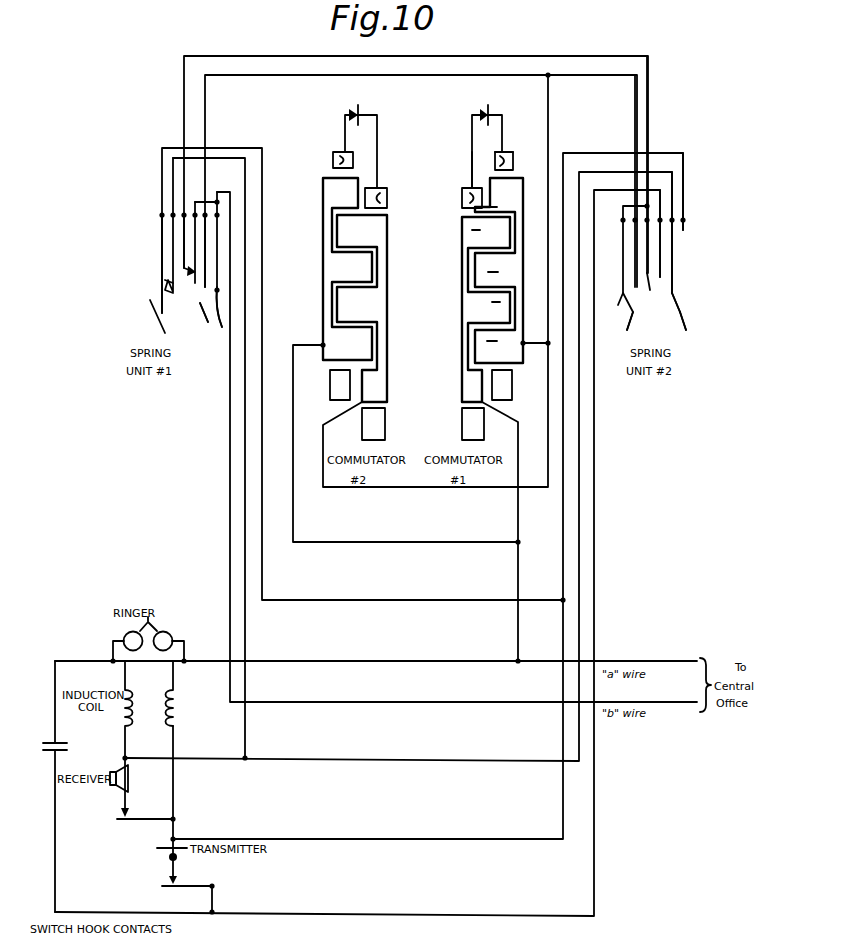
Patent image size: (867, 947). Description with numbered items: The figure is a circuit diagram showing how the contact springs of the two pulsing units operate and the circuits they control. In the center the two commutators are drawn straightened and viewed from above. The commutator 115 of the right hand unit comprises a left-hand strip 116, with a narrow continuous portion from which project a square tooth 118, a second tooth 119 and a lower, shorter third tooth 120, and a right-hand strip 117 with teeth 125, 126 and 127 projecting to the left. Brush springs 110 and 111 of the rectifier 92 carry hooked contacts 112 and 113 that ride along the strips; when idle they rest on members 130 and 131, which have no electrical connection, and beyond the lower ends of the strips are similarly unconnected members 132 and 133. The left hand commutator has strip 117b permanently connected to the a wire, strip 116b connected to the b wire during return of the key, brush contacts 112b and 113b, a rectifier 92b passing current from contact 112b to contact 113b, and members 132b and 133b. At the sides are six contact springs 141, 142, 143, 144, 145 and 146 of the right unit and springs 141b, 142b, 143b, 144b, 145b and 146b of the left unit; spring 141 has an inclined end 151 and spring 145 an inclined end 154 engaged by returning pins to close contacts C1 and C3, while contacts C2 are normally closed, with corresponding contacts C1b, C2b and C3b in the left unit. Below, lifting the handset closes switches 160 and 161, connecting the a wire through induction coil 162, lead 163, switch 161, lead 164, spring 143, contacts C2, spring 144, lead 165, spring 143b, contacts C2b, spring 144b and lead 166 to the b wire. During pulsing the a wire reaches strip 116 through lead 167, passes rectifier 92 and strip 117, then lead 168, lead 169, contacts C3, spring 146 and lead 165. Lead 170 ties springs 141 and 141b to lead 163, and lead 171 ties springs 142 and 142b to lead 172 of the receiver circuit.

The selenium rectifier 92 is at (487, 112).
The rectifier of the left hand unit 92b is at (364, 112).
The flat spring of rectifier brush 110 is at (472, 152).
The flat spring of rectifier brush 111 is at (504, 146).
The brush contact 112 is at (462, 200).
The brush contact of left hand unit 112b is at (380, 188).
The brush contact 113 is at (512, 157).
The brush contact of left hand unit 113b is at (336, 160).
The commutator 115 is at (453, 290).
The left-hand commutator strip 116 is at (450, 267).
The left-hand strip of left hand commutator 116b is at (389, 258).
The right-hand commutator strip 117 is at (523, 195).
The right-hand strip of left hand commutator 117b is at (322, 258).
The square tooth 118 is at (480, 230).
The second square tooth 119 is at (492, 302).
The third tooth 120 is at (477, 382).
The tooth 125 is at (487, 341).
The tooth 126 is at (488, 271).
The tooth 127 is at (497, 206).
The support member 130 is at (462, 193).
The support member 131 is at (511, 150).
The member beyond commutator strip 132 is at (458, 428).
The member beyond commutator strip of left hand unit 132b is at (392, 423).
The member beyond commutator strip 133 is at (512, 392).
The member beyond commutator strip of left hand unit 133b is at (330, 390).
The contact spring 141 is at (685, 230).
The contact spring 142 is at (673, 243).
The contact spring 143 is at (661, 249).
The contact spring 144 is at (648, 257).
The contact spring 145 is at (636, 263).
The contact spring 146 is at (625, 270).
The contact spring of left hand unit 141b is at (158, 266).
The contact spring of left hand unit 142b is at (170, 247).
The contact spring of left hand unit 143b is at (180, 233).
The contact spring of left hand unit 144b is at (196, 242).
The contact spring of left hand unit 145b is at (218, 278).
The contact spring of left hand unit 146b is at (231, 266).
The inclined forward end 151 is at (680, 310).
The inclined forward end 154 is at (642, 327).
The receiver switch 160 is at (164, 893).
The transmitter switch 161 is at (187, 877).
The induction coil 162 is at (182, 712).
The lead 163 is at (174, 797).
The lead 164 is at (598, 573).
The lead 165 is at (183, 84).
The lead 166 is at (226, 533).
The lead 167 is at (515, 569).
The lead 168 is at (550, 148).
The lead 169 is at (293, 78).
The lead 170 is at (562, 552).
The lead 171 is at (600, 461).
The lead of receiver circuit 172 is at (123, 742).
The contacts C1 is at (672, 300).
The contacts C2 is at (659, 301).
The contacts C3 is at (610, 321).
The contacts of left hand unit C1b is at (145, 292).
The contacts of left hand unit C2b is at (210, 333).
The contacts of left hand unit C3b is at (217, 328).